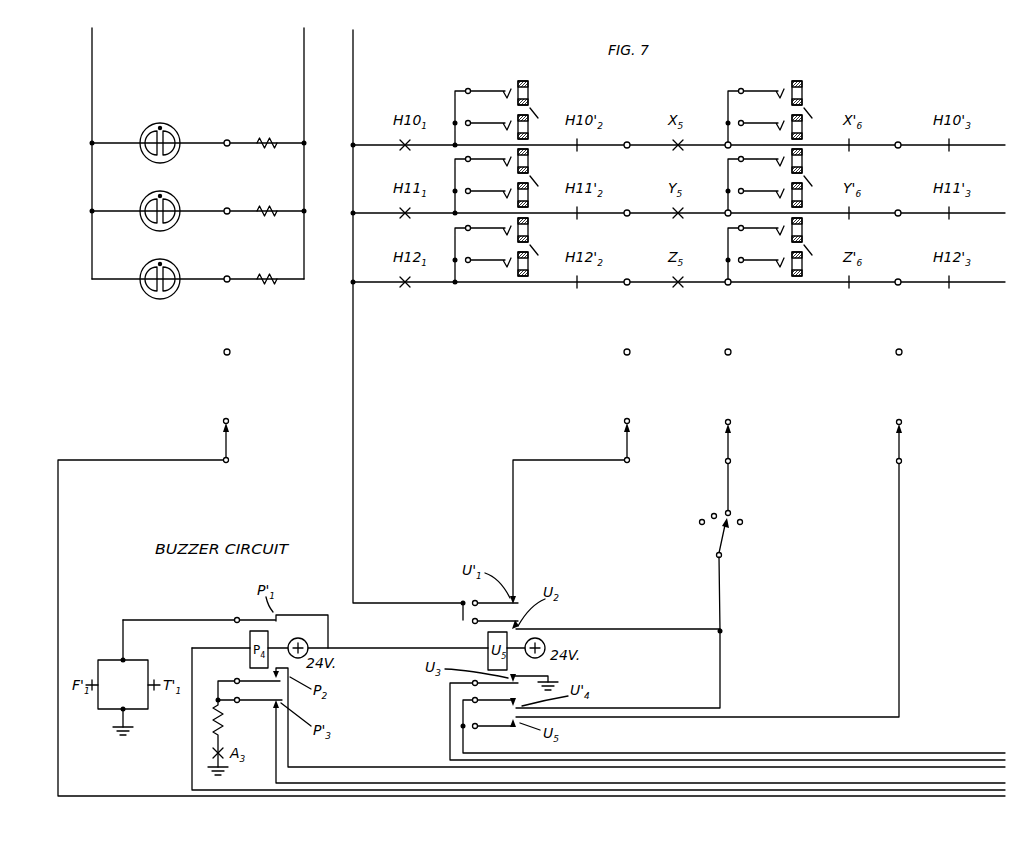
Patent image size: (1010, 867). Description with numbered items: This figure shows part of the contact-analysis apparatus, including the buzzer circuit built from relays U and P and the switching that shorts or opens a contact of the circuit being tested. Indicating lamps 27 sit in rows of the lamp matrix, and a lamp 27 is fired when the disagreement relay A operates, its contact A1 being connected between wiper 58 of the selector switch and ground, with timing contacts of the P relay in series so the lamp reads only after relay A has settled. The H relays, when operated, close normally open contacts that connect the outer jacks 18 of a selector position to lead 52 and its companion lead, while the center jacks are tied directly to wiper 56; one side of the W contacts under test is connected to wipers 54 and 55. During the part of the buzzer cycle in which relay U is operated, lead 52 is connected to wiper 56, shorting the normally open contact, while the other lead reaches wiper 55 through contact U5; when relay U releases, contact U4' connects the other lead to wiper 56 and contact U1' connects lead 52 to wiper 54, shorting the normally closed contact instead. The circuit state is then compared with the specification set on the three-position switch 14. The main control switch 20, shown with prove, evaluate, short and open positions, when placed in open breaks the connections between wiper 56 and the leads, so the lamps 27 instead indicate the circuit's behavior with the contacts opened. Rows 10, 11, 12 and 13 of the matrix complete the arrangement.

The first lamp circuit row 10 is at (163, 144).
The second lamp circuit row 11 is at (163, 212).
The third lamp circuit row 12 is at (162, 280).
The terminal row 13 is at (461, 349).
The three-position switch 14 is at (480, 437).
The outer jacks 18 is at (674, 178).
The main control switch 20 is at (727, 542).
The indicating lamp 27 is at (173, 154).
The lead 52 is at (354, 380).
The wiper 54 is at (625, 444).
The wiper 55 is at (901, 444).
The wiper 56 is at (730, 444).
The wiper 58 is at (228, 438).